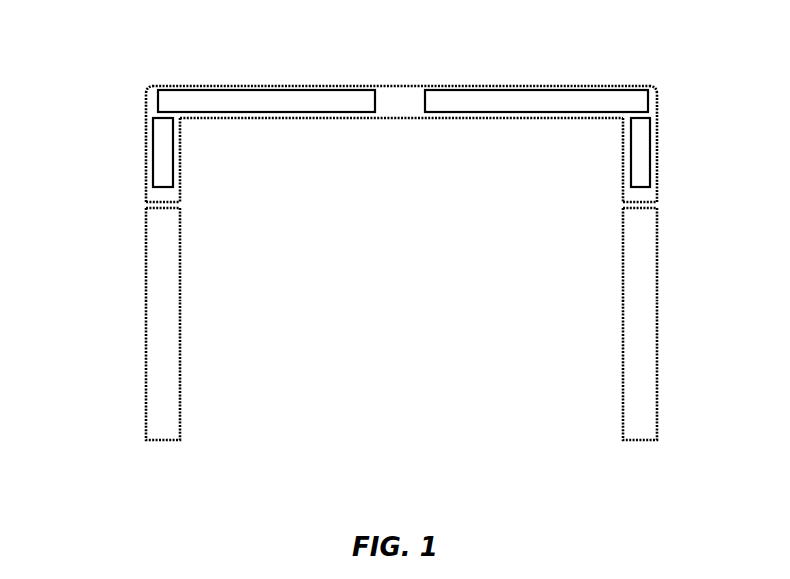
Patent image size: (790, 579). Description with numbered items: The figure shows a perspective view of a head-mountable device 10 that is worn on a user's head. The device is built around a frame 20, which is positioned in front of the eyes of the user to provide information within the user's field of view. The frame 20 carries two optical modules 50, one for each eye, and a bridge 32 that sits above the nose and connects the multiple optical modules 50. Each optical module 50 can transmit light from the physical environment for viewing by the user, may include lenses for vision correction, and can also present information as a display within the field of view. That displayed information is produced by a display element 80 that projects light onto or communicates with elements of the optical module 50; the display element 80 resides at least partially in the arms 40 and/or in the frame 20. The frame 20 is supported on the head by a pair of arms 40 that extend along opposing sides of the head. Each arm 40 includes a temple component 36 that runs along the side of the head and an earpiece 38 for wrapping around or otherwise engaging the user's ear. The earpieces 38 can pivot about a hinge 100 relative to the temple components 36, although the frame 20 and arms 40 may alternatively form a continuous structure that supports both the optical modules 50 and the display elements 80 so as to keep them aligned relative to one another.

The head-mountable device 10 is at (112, 40).
The frame 20 is at (610, 86).
The bridge 32 is at (400, 86).
The temple component 36 is at (146, 116).
The earpiece 38 is at (162, 350).
The arm 40 is at (181, 245).
The optical module 50 is at (196, 100).
The display element 80 is at (162, 163).
The hinge 100 is at (146, 203).